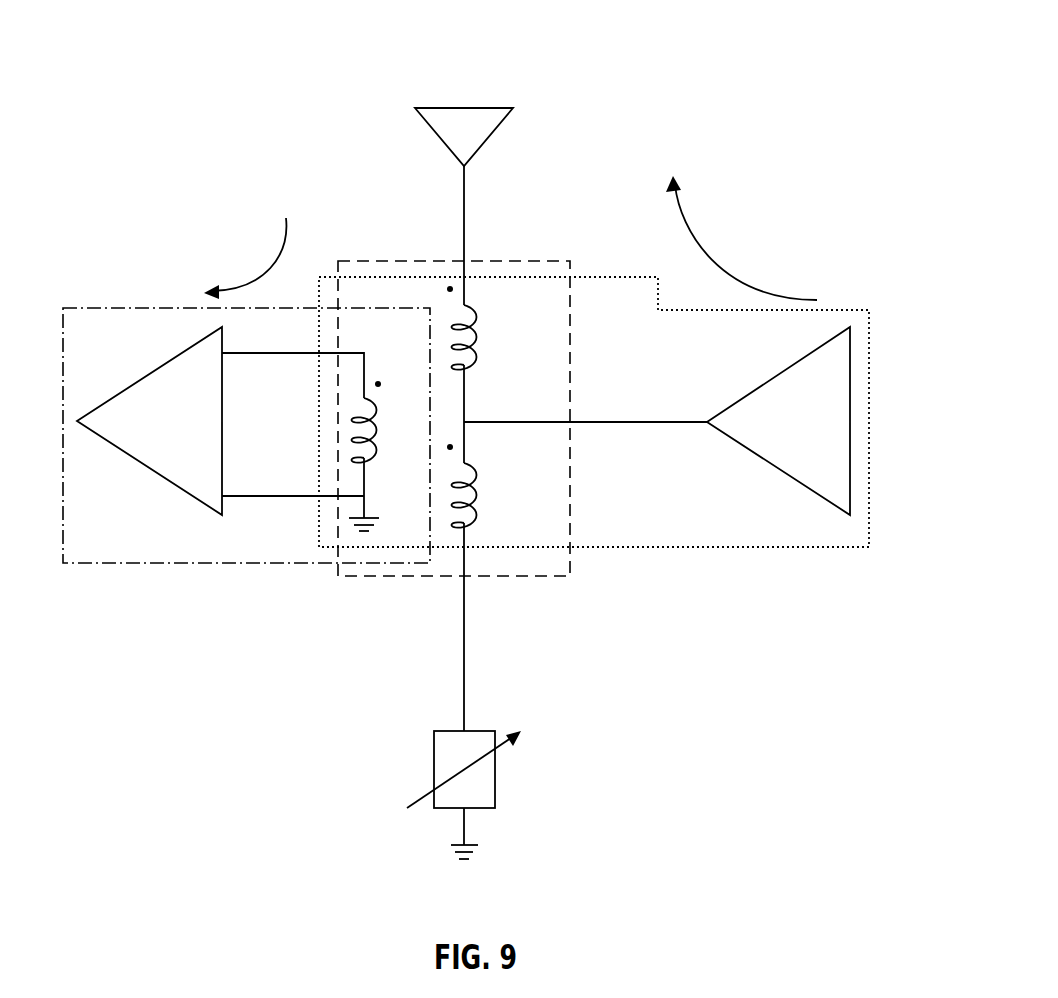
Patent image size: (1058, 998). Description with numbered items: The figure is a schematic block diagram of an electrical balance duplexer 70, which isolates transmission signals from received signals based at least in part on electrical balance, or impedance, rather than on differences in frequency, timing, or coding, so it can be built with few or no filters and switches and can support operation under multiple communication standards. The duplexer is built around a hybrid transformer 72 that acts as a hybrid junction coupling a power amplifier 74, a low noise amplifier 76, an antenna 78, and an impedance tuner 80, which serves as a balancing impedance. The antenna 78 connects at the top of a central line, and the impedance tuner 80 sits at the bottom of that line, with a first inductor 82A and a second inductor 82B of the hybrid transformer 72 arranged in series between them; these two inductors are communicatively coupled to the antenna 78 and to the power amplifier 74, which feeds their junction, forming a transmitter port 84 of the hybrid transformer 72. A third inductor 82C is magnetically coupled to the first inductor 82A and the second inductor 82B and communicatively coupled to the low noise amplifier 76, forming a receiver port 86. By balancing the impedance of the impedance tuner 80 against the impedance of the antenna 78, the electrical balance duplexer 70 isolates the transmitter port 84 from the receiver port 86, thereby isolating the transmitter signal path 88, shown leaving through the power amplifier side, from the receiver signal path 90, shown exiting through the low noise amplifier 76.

The electrical balance duplexer 70 is at (819, 49).
The hybrid transformer 72 is at (571, 381).
The power amplifier 74 is at (778, 372).
The low noise amplifier 76 is at (152, 372).
The antenna 78 is at (463, 106).
The impedance tuner 80 is at (432, 775).
The first inductor 82A is at (478, 335).
The second inductor 82B is at (478, 497).
The third inductor 82C is at (341, 437).
The transmitter port 84 is at (728, 548).
The receiver port 86 is at (178, 563).
The transmitter signal path 88 is at (700, 252).
The receiver signal path 90 is at (263, 270).